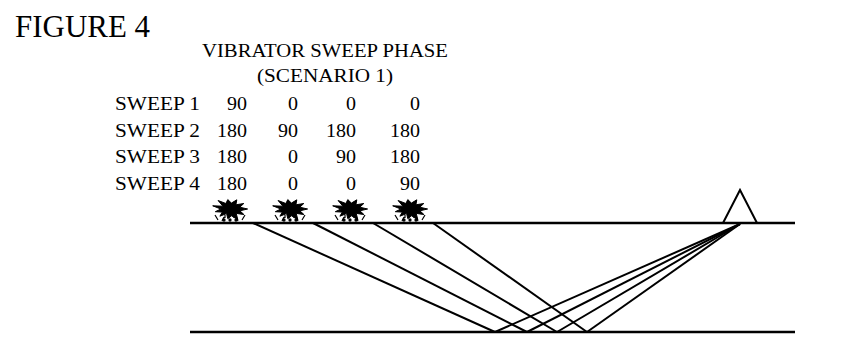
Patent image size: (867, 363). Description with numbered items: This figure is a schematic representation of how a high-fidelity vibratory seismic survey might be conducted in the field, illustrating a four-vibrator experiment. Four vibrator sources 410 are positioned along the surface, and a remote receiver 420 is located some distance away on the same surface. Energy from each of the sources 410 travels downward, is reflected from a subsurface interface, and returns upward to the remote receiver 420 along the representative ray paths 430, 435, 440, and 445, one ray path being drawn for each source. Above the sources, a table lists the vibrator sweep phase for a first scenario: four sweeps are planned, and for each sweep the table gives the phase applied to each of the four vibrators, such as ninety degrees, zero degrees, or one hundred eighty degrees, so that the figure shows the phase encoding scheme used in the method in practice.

The sources 410 is at (293, 226).
The remote receiver 420 is at (738, 188).
The representative ray path 430 is at (388, 285).
The representative ray path 435 is at (440, 289).
The representative ray path 440 is at (485, 289).
The representative ray path 445 is at (535, 295).